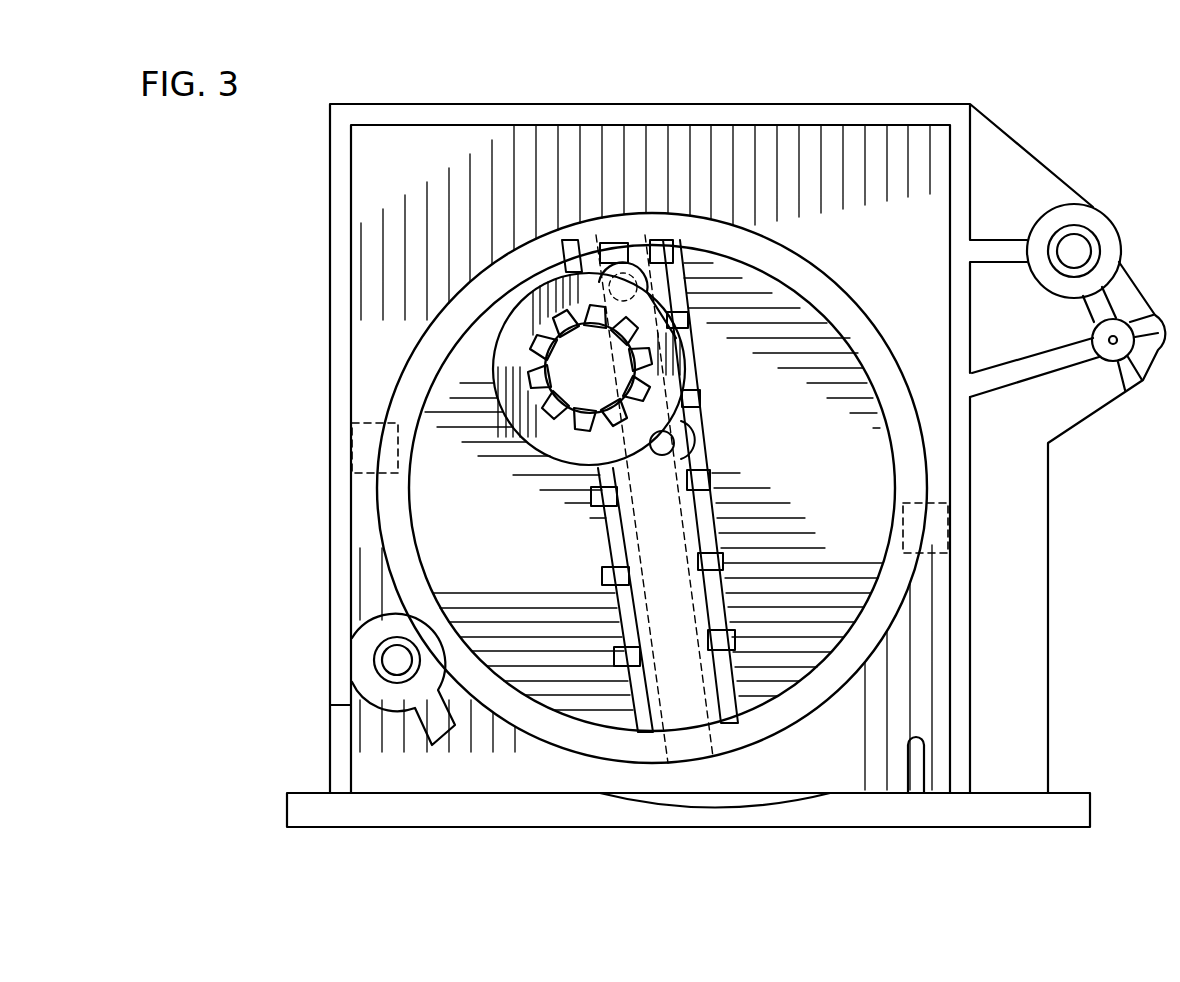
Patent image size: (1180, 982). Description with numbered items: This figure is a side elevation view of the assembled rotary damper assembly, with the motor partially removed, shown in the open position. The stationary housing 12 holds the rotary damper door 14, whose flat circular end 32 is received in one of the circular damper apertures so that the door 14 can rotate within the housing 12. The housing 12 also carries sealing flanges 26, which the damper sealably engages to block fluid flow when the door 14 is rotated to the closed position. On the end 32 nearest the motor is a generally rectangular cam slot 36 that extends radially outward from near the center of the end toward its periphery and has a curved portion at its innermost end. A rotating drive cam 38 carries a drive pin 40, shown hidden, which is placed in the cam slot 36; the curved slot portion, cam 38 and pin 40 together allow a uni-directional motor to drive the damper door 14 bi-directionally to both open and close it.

The housing 12 is at (933, 103).
The rotary damper door 14 is at (816, 249).
The sealing flanges 26 is at (358, 447).
The end 32 is at (741, 285).
The cam slot 36 is at (612, 258).
The drive cam 38 is at (522, 344).
The drive pin 40 is at (640, 285).